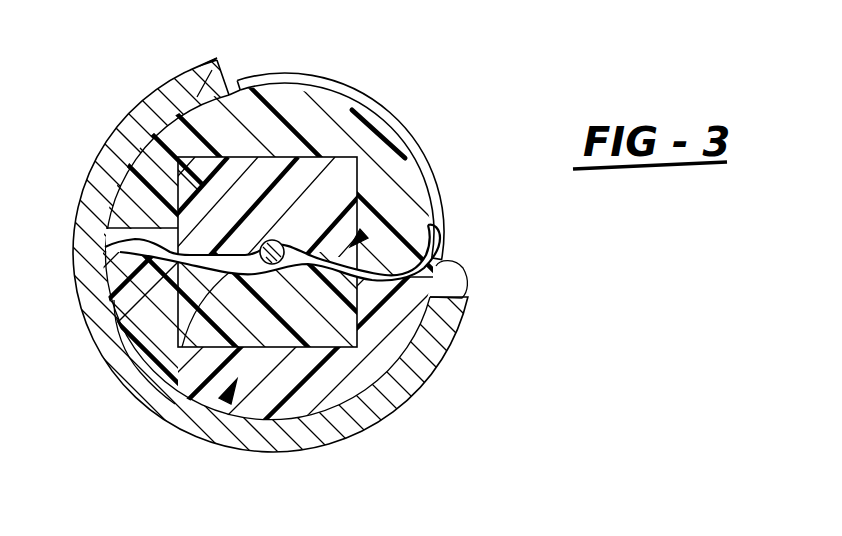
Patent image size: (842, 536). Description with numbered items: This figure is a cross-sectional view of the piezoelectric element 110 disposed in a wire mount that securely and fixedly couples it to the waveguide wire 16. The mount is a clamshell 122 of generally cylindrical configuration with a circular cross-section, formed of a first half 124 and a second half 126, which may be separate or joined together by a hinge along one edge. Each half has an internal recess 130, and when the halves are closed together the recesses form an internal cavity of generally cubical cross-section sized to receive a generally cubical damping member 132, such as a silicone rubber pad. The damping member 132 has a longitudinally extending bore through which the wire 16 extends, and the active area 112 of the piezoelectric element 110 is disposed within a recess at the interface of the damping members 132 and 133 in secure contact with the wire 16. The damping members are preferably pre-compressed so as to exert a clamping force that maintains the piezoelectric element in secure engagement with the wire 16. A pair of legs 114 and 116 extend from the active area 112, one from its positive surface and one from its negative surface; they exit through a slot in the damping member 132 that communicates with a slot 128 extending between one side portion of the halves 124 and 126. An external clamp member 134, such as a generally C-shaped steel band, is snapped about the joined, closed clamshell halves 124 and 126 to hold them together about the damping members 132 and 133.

The waveguide wire 16 is at (283, 243).
The piezoelectric element 110 is at (362, 232).
The active area 112 is at (171, 415).
The leg 114 is at (447, 220).
The leg 116 is at (337, 170).
The clamshell 122 is at (225, 402).
The first half 124 is at (131, 300).
The second half 126 is at (207, 115).
The slot 128 is at (443, 262).
The recess 130 is at (286, 157).
The damping member 132 is at (287, 342).
The damping member 133 is at (178, 165).
The external clamp member 134 is at (107, 157).